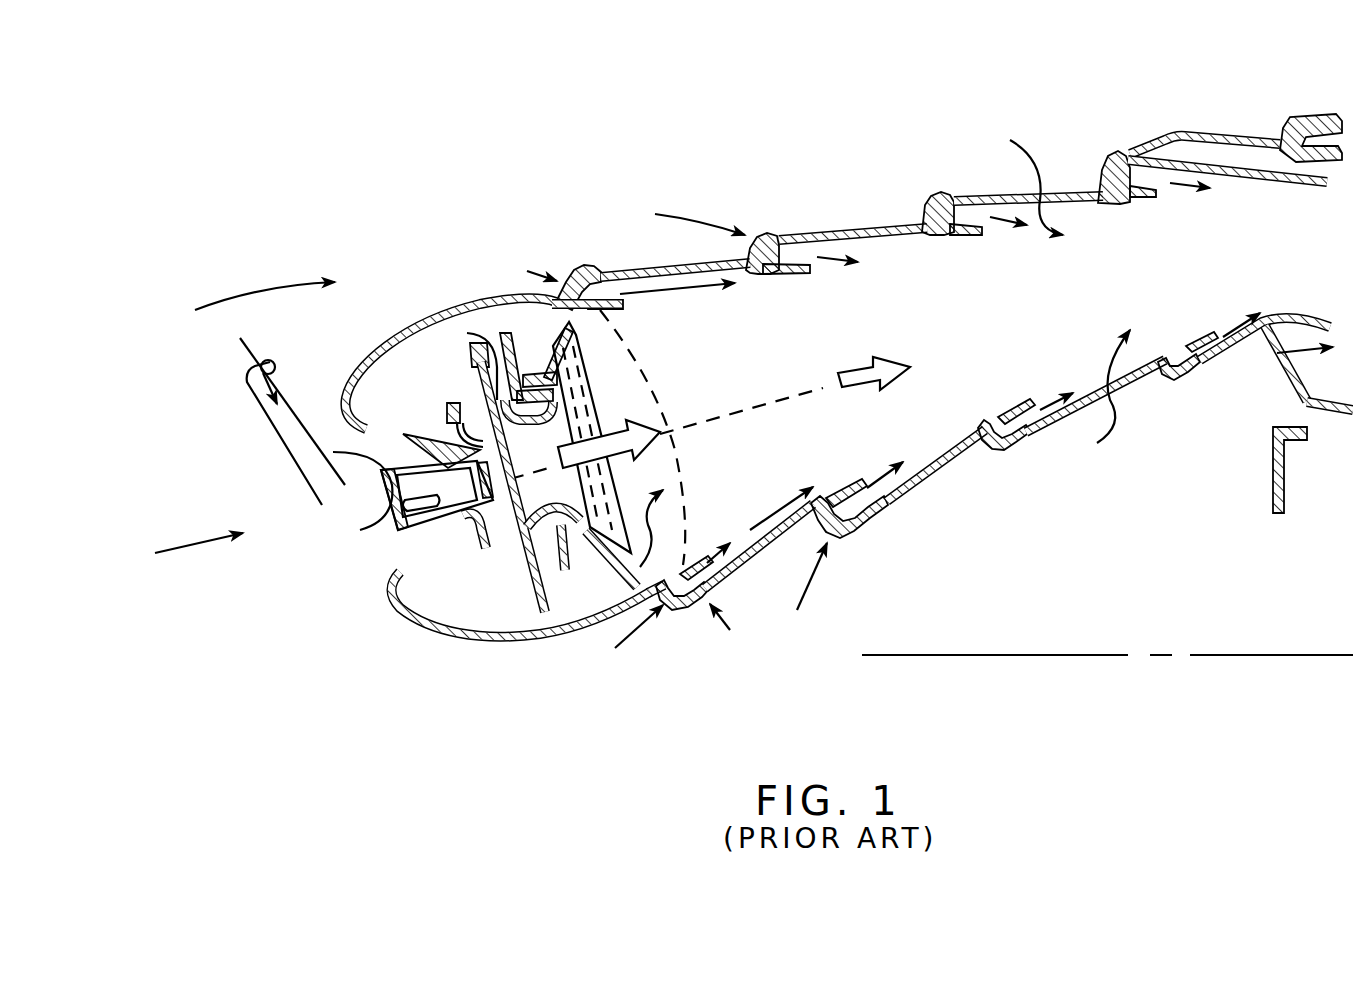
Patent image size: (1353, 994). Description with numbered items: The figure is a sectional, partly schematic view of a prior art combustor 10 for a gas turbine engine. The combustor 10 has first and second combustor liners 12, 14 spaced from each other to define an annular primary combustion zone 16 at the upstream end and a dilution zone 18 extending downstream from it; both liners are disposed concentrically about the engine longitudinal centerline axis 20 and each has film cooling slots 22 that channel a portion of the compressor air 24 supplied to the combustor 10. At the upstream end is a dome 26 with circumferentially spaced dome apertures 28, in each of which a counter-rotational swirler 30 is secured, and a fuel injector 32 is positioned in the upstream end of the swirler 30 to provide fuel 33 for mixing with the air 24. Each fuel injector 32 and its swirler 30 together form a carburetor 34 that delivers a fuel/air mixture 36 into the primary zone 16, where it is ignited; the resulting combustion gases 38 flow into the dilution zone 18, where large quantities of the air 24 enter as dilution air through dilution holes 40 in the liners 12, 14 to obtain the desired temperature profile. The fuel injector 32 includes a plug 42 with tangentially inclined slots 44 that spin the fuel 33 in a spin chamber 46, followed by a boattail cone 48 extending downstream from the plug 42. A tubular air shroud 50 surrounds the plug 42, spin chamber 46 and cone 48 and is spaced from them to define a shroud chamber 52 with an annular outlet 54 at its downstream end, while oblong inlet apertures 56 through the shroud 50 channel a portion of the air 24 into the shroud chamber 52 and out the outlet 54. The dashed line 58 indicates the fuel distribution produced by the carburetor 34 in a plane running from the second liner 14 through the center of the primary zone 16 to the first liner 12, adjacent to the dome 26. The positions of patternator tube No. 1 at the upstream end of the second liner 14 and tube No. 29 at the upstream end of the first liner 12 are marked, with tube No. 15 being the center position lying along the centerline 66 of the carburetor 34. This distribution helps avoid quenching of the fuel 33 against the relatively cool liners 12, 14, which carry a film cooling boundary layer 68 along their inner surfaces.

The combustor 10 is at (835, 218).
The first combustor liner 12 is at (957, 192).
The second combustor liner 14 is at (955, 432).
The primary combustion zone 16 is at (744, 388).
The dilution zone 18 is at (1086, 310).
The engine longitudinal centerline axis 20 is at (1200, 652).
The film cooling slots 22 is at (594, 262).
The compressor air 24 is at (244, 300).
The dome 26 is at (543, 355).
The dome apertures 28 is at (583, 537).
The counter-rotational swirler 30 is at (460, 363).
The fuel injector 32 is at (365, 527).
The fuel 33 is at (248, 360).
The carburetor 34 is at (470, 538).
The fuel/air mixture 36 is at (613, 427).
The combustion gases 38 is at (863, 390).
The dilution holes 40 is at (1060, 190).
The plug 42 is at (388, 477).
The tangentially inclined slots 44 is at (385, 503).
The spin chamber 46 is at (383, 540).
The boattail cone 48 is at (453, 515).
The tubular air shroud 50 is at (387, 472).
The shroud chamber 52 is at (473, 433).
The annular outlet 54 is at (503, 477).
The inlet apertures 56 is at (452, 492).
The fuel distribution 58 is at (648, 388).
The centerline of the carburetor 66 is at (385, 504).
The film cooling boundary layer 68 is at (712, 291).
The tube No. 1 position 1 is at (683, 565).
The tube No. 15 position 15 is at (667, 427).
The tube No. 29 position 29 is at (603, 307).